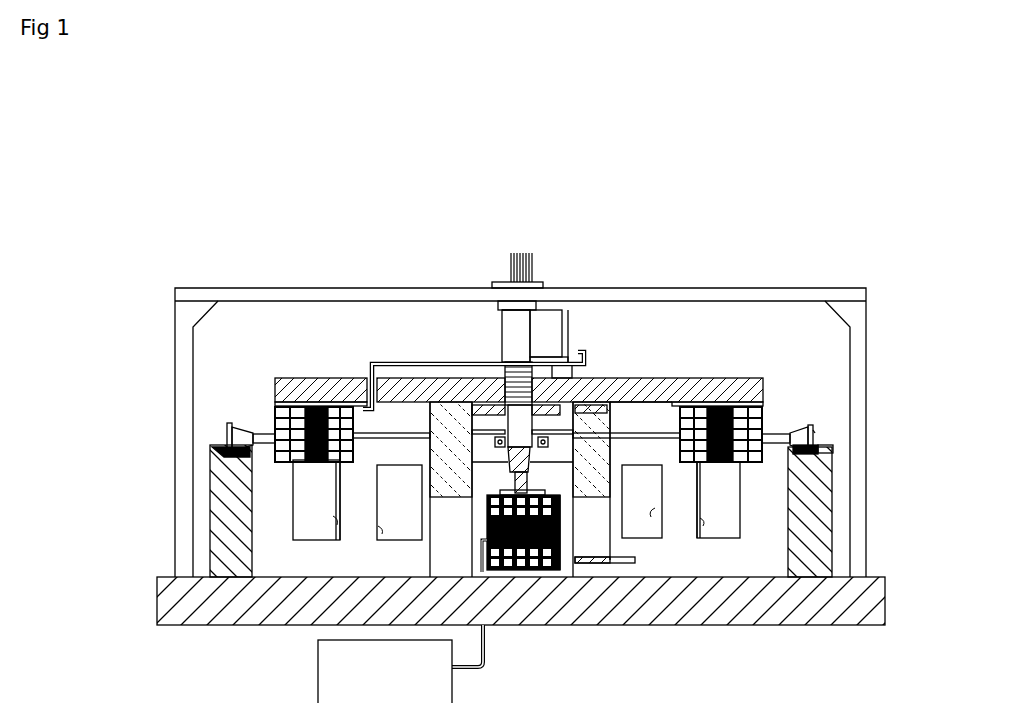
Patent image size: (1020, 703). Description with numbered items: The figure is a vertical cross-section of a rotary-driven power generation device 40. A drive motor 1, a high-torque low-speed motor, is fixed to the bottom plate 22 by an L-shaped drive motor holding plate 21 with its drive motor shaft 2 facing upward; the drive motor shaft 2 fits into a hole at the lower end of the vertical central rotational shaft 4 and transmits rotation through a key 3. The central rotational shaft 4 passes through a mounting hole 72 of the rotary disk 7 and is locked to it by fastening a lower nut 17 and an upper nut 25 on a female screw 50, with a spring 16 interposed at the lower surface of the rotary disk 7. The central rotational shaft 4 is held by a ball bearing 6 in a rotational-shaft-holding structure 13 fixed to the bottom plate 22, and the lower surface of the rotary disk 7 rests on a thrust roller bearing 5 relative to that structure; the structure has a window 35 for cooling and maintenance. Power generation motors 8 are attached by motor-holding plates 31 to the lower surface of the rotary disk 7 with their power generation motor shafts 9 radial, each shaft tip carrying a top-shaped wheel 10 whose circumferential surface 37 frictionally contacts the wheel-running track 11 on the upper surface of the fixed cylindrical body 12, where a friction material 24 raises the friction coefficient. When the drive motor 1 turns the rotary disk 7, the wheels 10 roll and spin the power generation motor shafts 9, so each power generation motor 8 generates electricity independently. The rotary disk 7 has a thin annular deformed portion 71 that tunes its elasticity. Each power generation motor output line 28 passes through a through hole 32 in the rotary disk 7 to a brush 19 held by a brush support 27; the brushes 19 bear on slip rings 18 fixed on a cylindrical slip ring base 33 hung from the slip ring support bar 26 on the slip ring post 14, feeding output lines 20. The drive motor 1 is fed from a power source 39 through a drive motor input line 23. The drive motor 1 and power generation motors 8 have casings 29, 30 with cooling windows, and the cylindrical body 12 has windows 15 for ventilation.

The drive motor 1 is at (487, 527).
The drive motor shaft 2 is at (528, 482).
The key 3 is at (512, 483).
The central rotational shaft 4 is at (505, 462).
The thrust roller bearing 5 is at (608, 410).
The ball bearing 6 is at (549, 441).
The rotary disk 7 is at (320, 384).
The power generation motor 8 is at (312, 406).
The power generation motor shaft 9 is at (266, 450).
The top-shaped wheel 10 is at (252, 432).
The wheel-running track 11 is at (224, 441).
The cylindrical body 12 is at (253, 558).
The rotational-shaft-holding structure 13 is at (430, 462).
The slip ring post 14 is at (192, 328).
The window 15 is at (340, 525).
The spring 16 is at (478, 378).
The lower nut 17 is at (430, 431).
The slip ring 18 is at (500, 321).
The brush 19 is at (554, 337).
The output line 20 is at (540, 250).
The drive motor holding plate 21 is at (612, 572).
The bottom plate 22 is at (725, 623).
The drive motor input line 23 is at (479, 669).
The friction material 24 is at (232, 452).
The upper nut 25 is at (584, 364).
The slip ring support bar 26 is at (287, 290).
The brush support 27 is at (569, 339).
The power generation motor output line 28 is at (377, 371).
The casing 29 is at (546, 568).
The casing 30 is at (332, 460).
The motor-holding plate 31 is at (275, 403).
The through hole 32 is at (369, 382).
The slip ring base 33 is at (501, 316).
The window 35 is at (441, 512).
The circumferential surface 37 is at (813, 430).
The power source 39 is at (318, 677).
The rotary-driven power generation device 40 is at (787, 281).
The female screw 50 is at (510, 381).
The deformed portion 71 is at (655, 380).
The mounting hole 72 is at (500, 408).